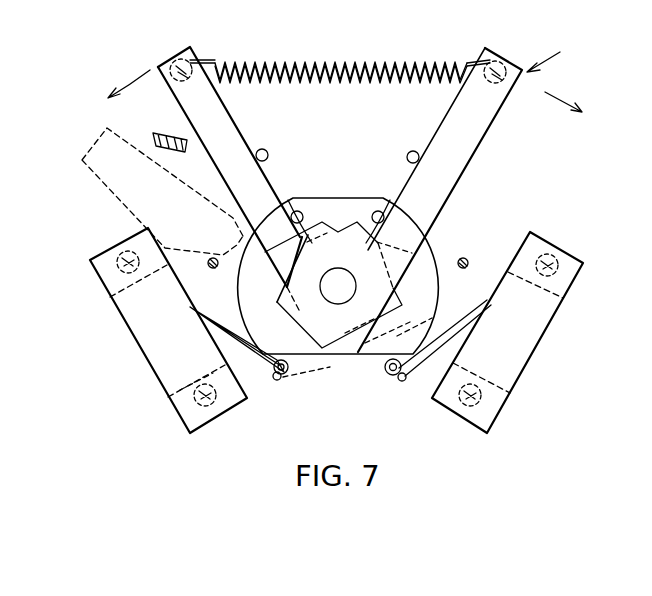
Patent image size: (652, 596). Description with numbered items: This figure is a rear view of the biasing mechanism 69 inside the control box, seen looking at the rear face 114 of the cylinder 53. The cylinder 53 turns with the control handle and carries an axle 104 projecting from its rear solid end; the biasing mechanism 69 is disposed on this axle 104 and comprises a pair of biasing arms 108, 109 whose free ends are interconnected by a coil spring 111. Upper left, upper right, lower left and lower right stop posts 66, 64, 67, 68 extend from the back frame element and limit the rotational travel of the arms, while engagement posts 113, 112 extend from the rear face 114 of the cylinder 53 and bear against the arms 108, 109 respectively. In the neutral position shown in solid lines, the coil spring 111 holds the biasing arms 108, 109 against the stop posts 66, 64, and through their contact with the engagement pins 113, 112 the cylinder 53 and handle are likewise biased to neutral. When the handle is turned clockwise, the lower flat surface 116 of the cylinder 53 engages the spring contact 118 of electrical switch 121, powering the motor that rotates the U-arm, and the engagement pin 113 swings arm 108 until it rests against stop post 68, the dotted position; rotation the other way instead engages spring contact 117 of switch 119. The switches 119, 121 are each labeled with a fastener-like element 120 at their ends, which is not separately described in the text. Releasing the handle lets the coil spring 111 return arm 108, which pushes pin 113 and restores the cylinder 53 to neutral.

The cylinder 53 is at (430, 248).
The upper right stop post 64 is at (411, 152).
The upper left stop post 66 is at (268, 150).
The lower left stop post 67 is at (468, 260).
The lower right stop post 68 is at (210, 268).
The biasing mechanism 69 is at (557, 77).
The axle 104 is at (338, 288).
The biasing arm 108 is at (183, 98).
The biasing arm 109 is at (470, 125).
The coil spring 111 is at (305, 63).
The engagement post 112 is at (378, 210).
The engagement post 113 is at (300, 209).
The rear face 114 is at (263, 327).
The lower flat surface 116 is at (375, 360).
The spring contact 117 is at (406, 381).
The spring contact 118 is at (277, 379).
The electrical switch 119 is at (503, 363).
The fastener 120 is at (92, 257).
The electrical switch 121 is at (150, 333).